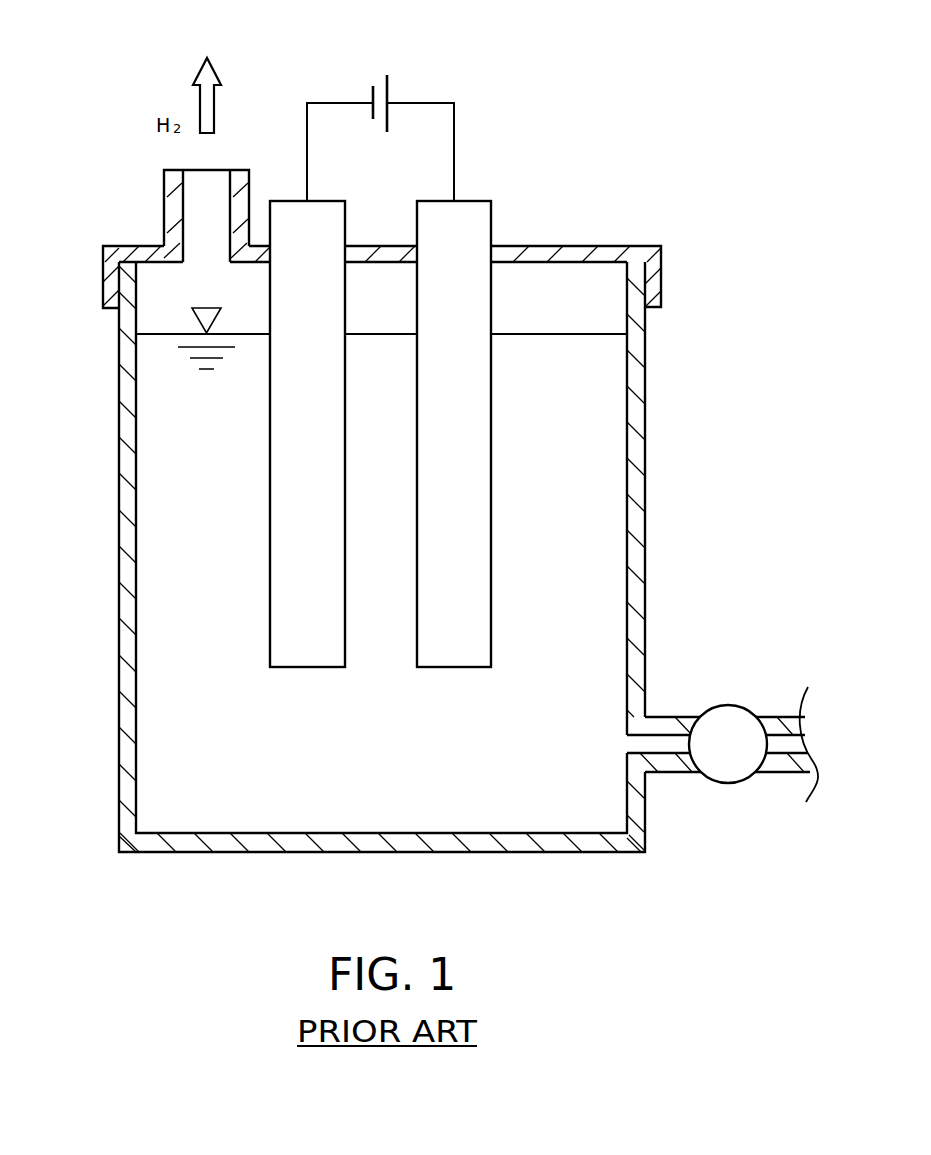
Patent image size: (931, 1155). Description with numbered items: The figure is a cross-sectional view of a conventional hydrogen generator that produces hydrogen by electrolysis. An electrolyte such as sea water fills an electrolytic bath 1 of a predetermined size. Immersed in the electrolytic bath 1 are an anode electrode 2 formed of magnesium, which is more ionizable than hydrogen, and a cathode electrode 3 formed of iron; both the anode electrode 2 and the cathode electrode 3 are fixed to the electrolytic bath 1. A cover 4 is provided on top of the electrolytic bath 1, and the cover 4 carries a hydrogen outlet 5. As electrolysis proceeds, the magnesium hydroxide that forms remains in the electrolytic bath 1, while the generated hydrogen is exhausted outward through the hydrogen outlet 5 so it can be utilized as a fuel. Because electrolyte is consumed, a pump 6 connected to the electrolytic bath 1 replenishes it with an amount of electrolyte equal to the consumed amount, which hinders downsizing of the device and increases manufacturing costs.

The electrolytic bath 1 is at (637, 378).
The anode electrode 2 is at (455, 475).
The cathode electrode 3 is at (288, 543).
The cover 4 is at (610, 253).
The hydrogen outlet 5 is at (173, 217).
The pump 6 is at (725, 772).